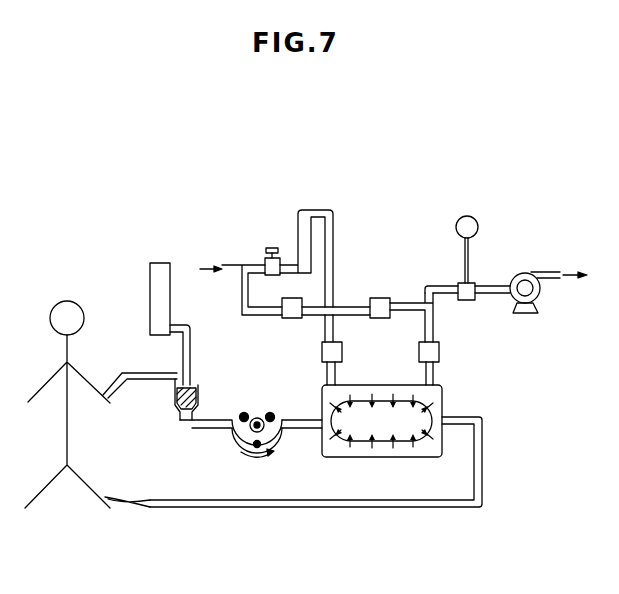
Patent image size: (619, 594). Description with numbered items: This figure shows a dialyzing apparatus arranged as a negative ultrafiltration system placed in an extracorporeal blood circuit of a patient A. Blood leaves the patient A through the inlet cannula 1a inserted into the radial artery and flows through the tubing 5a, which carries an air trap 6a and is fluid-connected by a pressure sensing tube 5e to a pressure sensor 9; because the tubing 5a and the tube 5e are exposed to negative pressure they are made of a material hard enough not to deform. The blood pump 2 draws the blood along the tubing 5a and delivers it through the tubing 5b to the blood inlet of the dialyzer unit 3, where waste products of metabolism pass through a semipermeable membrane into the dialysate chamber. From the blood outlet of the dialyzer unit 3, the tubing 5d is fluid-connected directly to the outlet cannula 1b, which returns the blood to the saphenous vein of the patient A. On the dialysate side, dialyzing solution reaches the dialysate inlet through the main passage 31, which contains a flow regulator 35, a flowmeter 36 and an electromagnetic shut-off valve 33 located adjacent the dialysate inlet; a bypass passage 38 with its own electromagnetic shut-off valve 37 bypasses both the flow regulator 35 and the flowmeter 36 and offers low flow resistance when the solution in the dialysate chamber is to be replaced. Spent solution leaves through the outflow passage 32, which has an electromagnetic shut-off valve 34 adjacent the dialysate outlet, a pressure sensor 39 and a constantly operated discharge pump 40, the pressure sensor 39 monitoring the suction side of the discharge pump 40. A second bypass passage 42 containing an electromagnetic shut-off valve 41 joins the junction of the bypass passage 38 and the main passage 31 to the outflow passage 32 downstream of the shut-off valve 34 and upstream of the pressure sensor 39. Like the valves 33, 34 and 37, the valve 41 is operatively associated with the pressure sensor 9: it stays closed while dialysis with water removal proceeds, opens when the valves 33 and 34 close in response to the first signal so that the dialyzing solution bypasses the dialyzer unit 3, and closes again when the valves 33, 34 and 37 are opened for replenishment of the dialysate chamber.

The patient A is at (66, 300).
The pressure sensor 9 is at (158, 262).
The inlet cannula 1a is at (106, 392).
The outlet cannula 1b is at (105, 497).
The air trap 6a is at (176, 418).
The pressure sensing tube 5e is at (200, 345).
The tubing 5a is at (208, 429).
The blood pump 2 is at (257, 416).
The tubing 5b is at (305, 430).
The dialyzer unit 3 is at (356, 385).
The tubing 5d is at (473, 468).
The flow regulator 35 is at (270, 247).
The flowmeter 36 is at (310, 186).
The bypass passage 38 is at (242, 303).
The electromagnetic shut-off valve 37 is at (288, 319).
The second bypass passage 42 is at (355, 298).
The main passage 31 is at (334, 326).
The electromagnetic shut-off valve 33 is at (322, 353).
The electromagnetic shut-off valve 41 is at (388, 298).
The outflow passage 32 is at (425, 326).
The electromagnetic shut-off valve 34 is at (440, 350).
The pressure sensor 39 is at (470, 218).
The discharge pump 40 is at (520, 275).